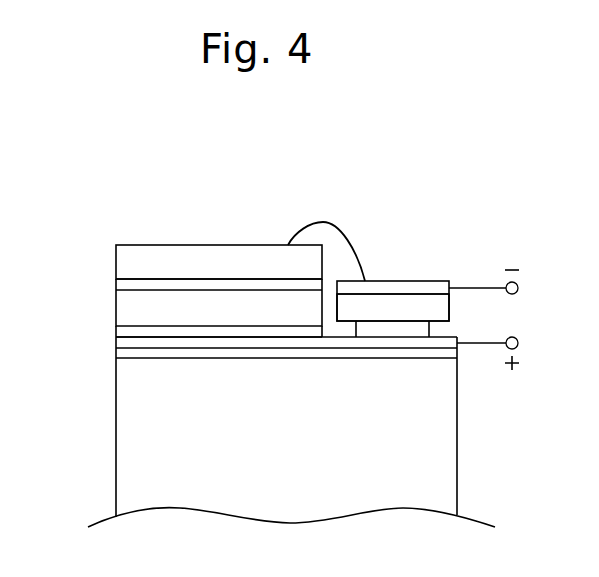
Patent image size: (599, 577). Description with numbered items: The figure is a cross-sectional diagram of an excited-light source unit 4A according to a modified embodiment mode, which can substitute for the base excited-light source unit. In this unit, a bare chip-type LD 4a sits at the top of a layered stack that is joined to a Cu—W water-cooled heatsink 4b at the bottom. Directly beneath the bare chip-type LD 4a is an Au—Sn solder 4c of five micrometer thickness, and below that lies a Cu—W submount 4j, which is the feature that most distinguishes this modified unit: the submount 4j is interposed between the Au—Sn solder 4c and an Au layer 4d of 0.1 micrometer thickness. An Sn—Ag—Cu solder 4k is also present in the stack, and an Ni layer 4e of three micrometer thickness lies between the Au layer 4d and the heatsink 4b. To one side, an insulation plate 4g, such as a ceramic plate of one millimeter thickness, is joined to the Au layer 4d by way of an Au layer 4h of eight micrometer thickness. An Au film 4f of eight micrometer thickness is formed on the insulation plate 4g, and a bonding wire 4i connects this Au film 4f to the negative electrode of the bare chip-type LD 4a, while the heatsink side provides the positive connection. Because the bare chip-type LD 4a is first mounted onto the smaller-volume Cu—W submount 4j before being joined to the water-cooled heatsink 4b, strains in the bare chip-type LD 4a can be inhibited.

The excited-light source unit 4A is at (287, 341).
The bare chip-type LD 4a is at (219, 255).
The Cu—W water-cooled heatsink 4b is at (437, 440).
The Au—Sn solder 4c is at (123, 285).
The Au layer 4d is at (123, 342).
The Ni layer 4e is at (123, 352).
The Au film 4f is at (420, 289).
The insulation plate 4g is at (436, 311).
The Au layer 4h is at (429, 328).
The bonding wire 4i is at (315, 222).
The Cu—W submount 4j is at (123, 312).
The Sn—Ag—Cu solder 4k is at (123, 332).